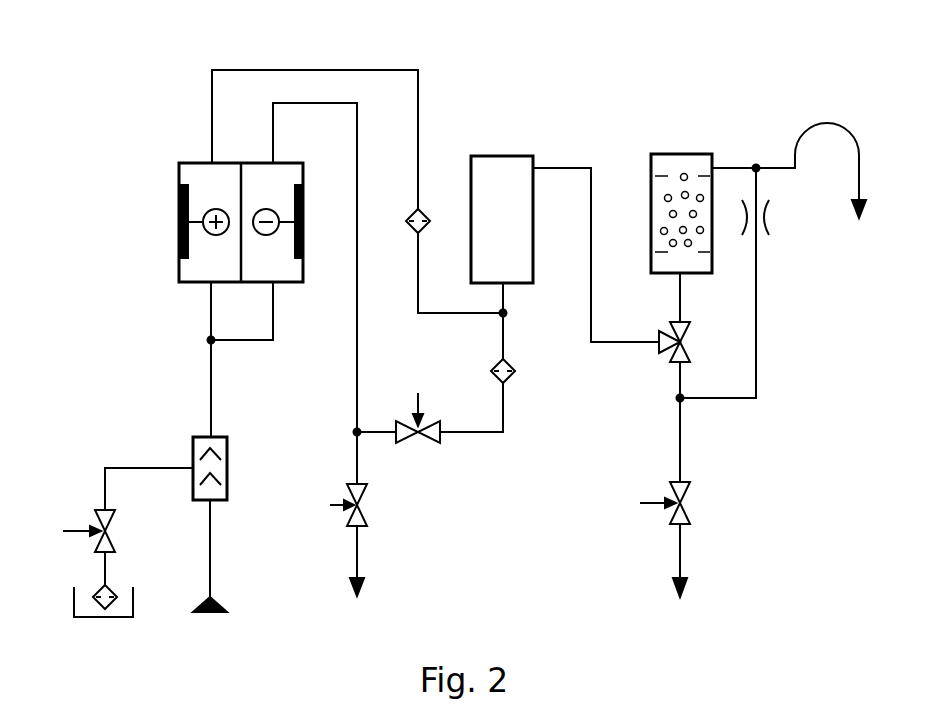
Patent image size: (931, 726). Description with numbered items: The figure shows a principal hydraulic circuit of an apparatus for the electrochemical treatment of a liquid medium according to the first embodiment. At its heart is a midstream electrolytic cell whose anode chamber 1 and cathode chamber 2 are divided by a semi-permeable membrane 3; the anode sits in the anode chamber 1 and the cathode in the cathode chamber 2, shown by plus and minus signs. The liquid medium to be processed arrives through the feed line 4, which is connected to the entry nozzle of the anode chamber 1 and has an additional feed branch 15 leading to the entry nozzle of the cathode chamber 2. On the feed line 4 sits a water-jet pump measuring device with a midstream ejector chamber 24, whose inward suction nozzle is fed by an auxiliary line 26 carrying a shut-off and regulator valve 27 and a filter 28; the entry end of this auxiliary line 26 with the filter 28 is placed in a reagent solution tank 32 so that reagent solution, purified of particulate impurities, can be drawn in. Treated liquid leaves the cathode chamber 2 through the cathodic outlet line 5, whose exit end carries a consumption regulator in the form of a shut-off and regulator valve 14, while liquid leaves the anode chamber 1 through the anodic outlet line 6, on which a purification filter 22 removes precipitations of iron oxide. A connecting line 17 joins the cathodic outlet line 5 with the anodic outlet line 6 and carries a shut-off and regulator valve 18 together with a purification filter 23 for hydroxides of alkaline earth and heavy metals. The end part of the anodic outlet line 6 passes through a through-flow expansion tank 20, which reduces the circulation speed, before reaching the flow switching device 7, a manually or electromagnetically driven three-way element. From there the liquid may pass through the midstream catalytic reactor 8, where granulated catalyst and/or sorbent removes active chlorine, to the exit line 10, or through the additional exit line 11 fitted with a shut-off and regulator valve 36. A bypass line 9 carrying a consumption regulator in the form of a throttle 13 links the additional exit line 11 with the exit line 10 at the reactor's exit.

The anode chamber 1 is at (217, 257).
The cathode chamber 2 is at (267, 180).
The membrane 3 is at (240, 195).
The feed line 4 is at (210, 550).
The cathodic outlet line 5 is at (293, 103).
The anodic outlet line 6 is at (212, 90).
The flow switching device 7 is at (692, 343).
The catalytic reactor 8 is at (663, 163).
The bypass line 9 is at (755, 294).
The exit line 10 is at (828, 125).
The additional exit line 11 is at (680, 432).
The throttle 13 is at (768, 215).
The shut-off and regulator valve 14 is at (365, 527).
The additional feed branch 15 is at (273, 305).
The connecting line 17 is at (503, 413).
The shut-off and regulator valve 18 is at (418, 443).
The expansion tank 20 is at (503, 156).
The purification filter 22 is at (428, 208).
The purification filter 23 is at (515, 371).
The ejector chamber 24 is at (227, 452).
The auxiliary line 26 is at (142, 468).
The shut-off and regulator valve 27 is at (97, 513).
The filter 28 is at (113, 587).
The reagent solution tank 32 is at (103, 617).
The shut-off and regulator valve 36 is at (692, 503).